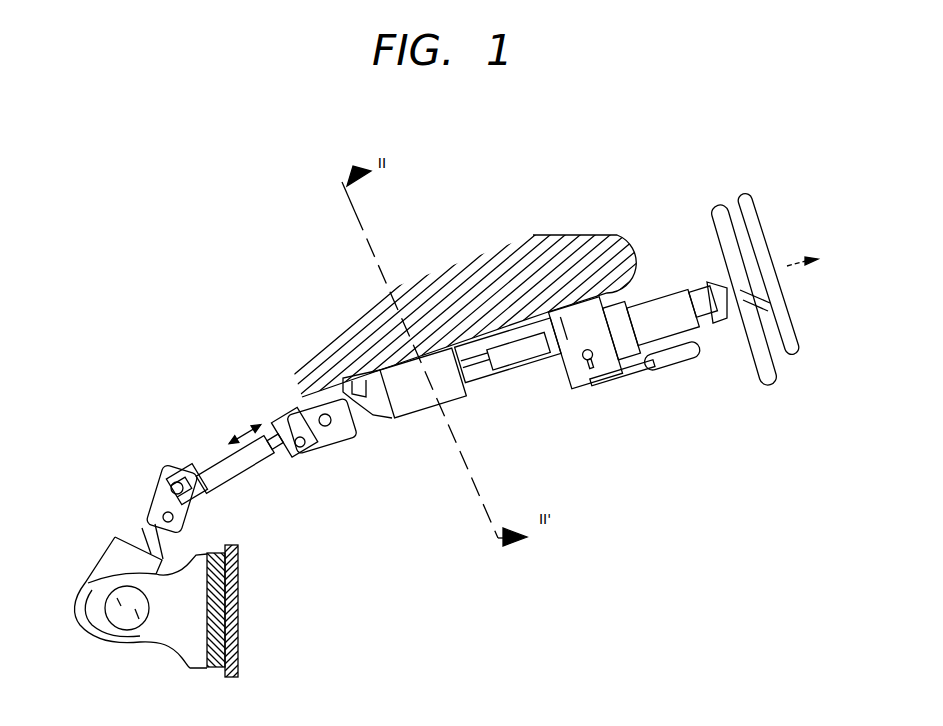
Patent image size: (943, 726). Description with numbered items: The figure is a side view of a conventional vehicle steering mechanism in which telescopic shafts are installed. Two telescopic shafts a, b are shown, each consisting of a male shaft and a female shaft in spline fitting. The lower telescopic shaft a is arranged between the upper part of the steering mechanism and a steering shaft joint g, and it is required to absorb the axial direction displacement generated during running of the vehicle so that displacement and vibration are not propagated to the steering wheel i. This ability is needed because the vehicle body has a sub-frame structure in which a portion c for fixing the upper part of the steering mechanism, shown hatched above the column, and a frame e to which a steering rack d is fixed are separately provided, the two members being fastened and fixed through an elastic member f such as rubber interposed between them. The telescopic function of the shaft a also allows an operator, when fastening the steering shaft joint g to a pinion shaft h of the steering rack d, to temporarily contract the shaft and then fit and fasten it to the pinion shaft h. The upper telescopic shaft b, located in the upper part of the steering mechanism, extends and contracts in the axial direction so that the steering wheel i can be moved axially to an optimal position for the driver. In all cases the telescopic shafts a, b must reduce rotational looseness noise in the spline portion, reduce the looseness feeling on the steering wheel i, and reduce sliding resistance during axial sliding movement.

The telescopic shaft a is at (280, 458).
The telescopic shaft b is at (533, 375).
The portion for fixing an upper part of the steering mechanism c is at (481, 277).
The steering rack d is at (110, 598).
The frame e is at (236, 615).
The elastic member f is at (230, 567).
The steering shaft joint g is at (158, 512).
The pinion shaft h is at (146, 538).
The steering wheel i is at (716, 204).